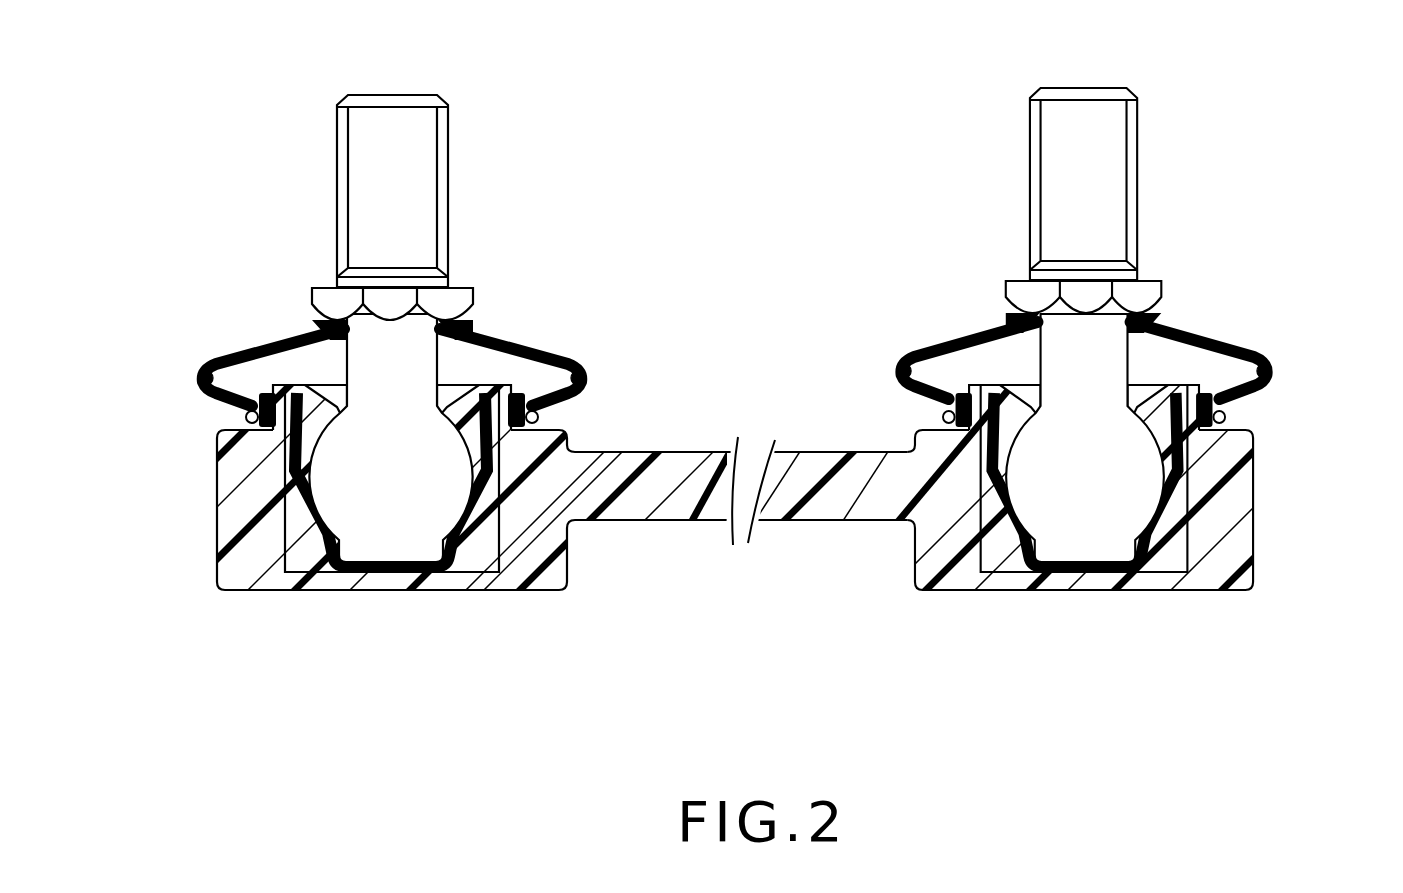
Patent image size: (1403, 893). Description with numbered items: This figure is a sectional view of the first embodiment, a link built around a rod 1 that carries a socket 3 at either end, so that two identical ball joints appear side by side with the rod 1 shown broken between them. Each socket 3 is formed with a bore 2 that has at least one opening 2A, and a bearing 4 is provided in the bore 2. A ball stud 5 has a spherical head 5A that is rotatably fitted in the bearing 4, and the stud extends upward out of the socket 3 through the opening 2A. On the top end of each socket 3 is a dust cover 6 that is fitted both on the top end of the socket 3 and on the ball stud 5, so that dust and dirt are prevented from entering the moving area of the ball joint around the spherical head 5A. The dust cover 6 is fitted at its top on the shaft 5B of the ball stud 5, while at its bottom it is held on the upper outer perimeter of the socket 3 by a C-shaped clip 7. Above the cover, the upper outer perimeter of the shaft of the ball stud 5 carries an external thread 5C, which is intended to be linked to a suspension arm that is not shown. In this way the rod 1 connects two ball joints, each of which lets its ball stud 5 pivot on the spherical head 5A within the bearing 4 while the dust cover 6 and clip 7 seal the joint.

The rod 1 is at (690, 493).
The bore 2 is at (222, 515).
The opening 2A is at (310, 380).
The socket 3 is at (490, 565).
The bearing 4 is at (522, 372).
The ball stud 5 is at (730, 381).
The spherical head 5A is at (390, 497).
The shaft 5B is at (362, 163).
The external thread 5C is at (333, 203).
The dust cover 6 is at (203, 378).
The C-shaped clip 7 is at (547, 417).